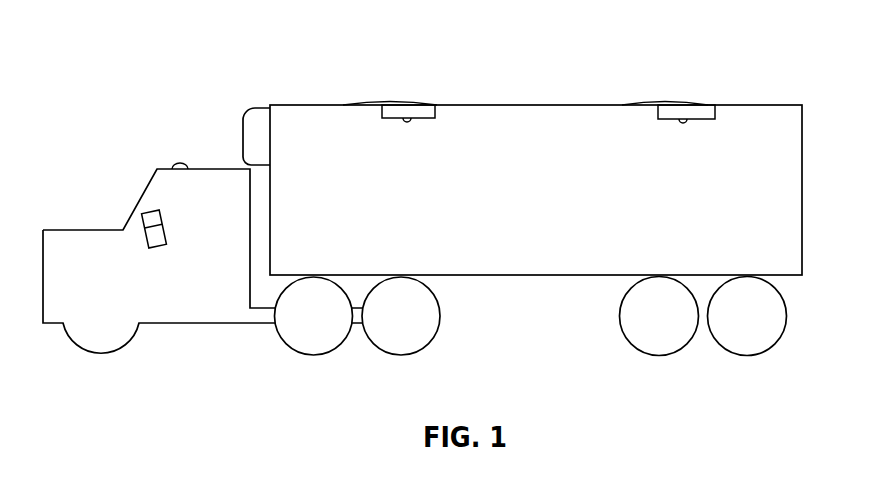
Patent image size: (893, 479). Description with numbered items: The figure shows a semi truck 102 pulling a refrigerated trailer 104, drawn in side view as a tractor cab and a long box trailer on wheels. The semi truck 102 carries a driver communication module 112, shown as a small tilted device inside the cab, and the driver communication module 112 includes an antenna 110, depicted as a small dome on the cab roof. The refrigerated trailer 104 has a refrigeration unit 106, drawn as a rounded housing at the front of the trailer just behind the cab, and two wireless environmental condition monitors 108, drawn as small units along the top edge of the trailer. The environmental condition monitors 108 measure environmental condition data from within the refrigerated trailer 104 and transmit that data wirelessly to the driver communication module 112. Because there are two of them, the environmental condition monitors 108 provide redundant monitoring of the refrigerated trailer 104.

The semi truck 102 is at (187, 318).
The refrigerated trailer 104 is at (552, 257).
The refrigeration unit 106 is at (256, 137).
The wireless environmental condition monitors 108 is at (410, 115).
The antenna 110 is at (178, 162).
The driver communication module 112 is at (150, 251).